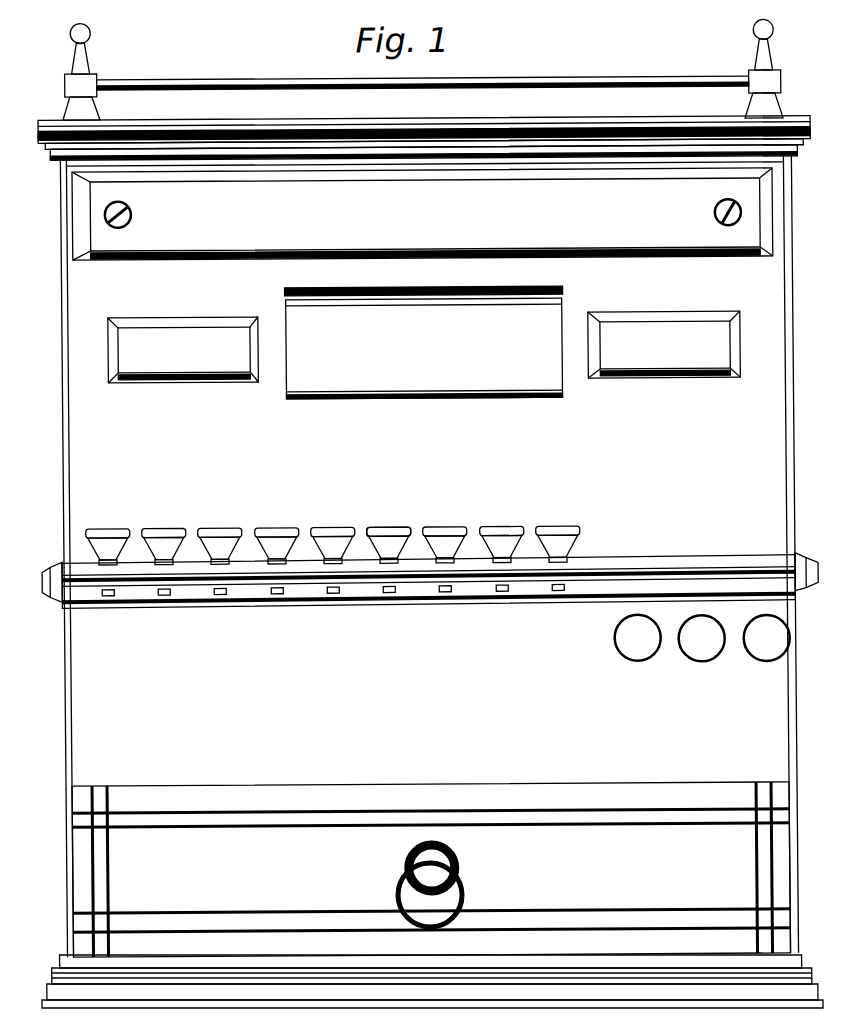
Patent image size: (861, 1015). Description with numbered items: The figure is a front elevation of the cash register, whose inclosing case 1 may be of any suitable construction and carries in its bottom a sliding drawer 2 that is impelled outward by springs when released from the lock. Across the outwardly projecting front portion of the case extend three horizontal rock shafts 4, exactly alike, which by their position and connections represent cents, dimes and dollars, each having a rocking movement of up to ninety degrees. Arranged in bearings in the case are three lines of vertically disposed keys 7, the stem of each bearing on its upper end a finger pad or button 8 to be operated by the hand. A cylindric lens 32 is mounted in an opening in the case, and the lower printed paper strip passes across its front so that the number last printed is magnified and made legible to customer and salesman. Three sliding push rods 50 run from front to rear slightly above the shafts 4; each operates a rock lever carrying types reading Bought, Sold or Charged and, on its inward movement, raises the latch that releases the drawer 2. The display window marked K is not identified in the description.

The inclosing case 1 is at (427, 488).
The sliding drawer 2 is at (431, 897).
The rock shaft 4 is at (178, 534).
The key 7 is at (216, 594).
The finger pad or button 8 is at (402, 536).
The cylindric lens 32 is at (515, 340).
The sliding push rod 50 is at (622, 624).
The amount indicator display K is at (450, 278).